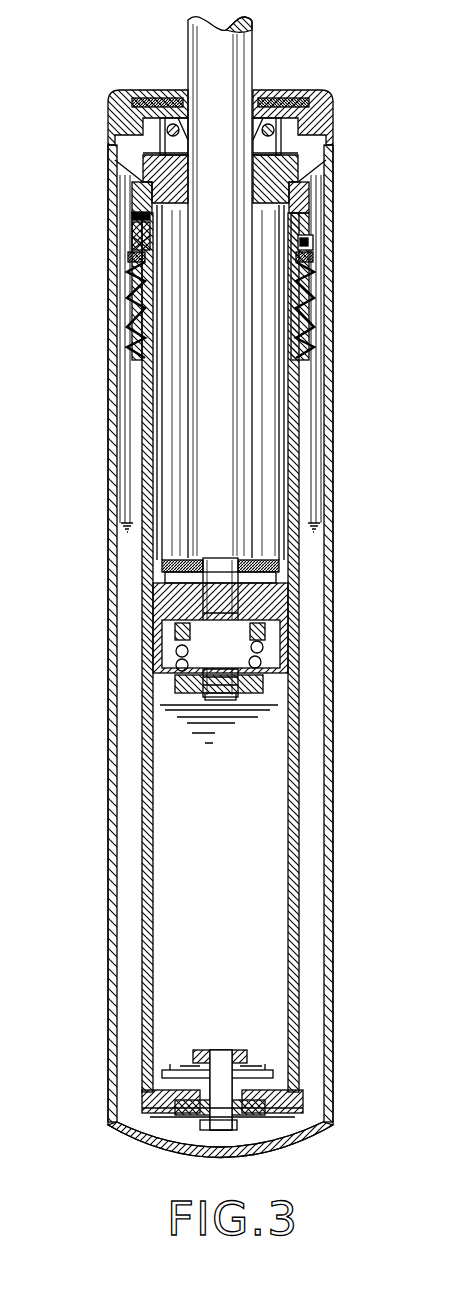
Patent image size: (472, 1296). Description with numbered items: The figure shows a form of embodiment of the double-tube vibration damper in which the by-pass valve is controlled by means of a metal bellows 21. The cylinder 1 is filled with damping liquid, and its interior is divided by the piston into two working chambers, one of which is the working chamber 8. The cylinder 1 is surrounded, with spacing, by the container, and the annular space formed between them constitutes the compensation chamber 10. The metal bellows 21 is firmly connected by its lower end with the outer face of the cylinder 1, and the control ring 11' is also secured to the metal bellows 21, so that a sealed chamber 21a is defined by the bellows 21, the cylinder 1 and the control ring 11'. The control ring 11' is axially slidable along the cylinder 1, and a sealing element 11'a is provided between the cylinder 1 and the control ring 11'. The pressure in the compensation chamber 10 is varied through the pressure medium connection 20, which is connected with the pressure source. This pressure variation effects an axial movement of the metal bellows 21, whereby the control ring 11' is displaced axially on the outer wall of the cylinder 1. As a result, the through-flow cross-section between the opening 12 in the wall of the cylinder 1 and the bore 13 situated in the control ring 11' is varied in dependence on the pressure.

The cylinder 1 is at (297, 403).
The working chamber 8 is at (170, 467).
The compensation chamber 10 is at (132, 623).
The control ring 11' is at (273, 276).
The sealing element 11'a is at (360, 265).
The opening 12 is at (132, 237).
The bore 13 is at (132, 218).
The pressure medium connection 20 is at (115, 145).
The metal bellows 21 is at (130, 312).
The sealed chamber 21a is at (130, 285).